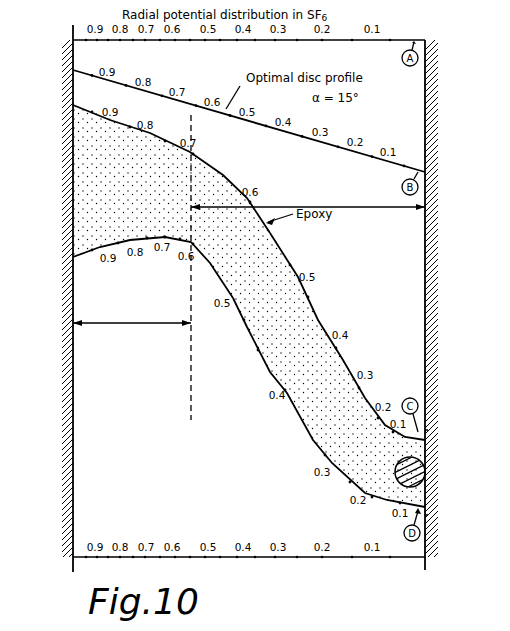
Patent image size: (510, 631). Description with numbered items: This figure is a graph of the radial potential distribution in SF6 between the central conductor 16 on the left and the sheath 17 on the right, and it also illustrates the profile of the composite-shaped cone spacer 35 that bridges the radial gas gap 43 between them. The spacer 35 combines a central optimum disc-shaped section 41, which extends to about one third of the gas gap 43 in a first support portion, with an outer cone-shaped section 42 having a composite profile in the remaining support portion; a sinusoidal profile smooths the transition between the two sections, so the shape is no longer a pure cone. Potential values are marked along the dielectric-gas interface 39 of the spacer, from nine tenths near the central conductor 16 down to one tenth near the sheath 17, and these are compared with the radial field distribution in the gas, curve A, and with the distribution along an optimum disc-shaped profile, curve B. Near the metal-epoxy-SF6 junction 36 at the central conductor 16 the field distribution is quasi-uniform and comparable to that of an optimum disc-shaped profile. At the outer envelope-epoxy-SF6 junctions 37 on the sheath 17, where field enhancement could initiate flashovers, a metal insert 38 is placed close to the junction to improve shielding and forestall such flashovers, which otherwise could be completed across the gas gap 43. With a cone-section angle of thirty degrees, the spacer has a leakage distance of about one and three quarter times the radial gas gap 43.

The central conductor 16 is at (74, 342).
The sheath 17 is at (424, 222).
The composite-shaped cone spacer 35 is at (293, 365).
The metal-epoxy-SF6 junction 36 is at (82, 106).
The outer envelope-epoxy-SF6 junction 37 is at (428, 430).
The metal insert 38 is at (427, 472).
The dielectric-gas interface 39 is at (287, 257).
The disc-shaped section 41 is at (157, 327).
The cone-shaped section 42 is at (355, 206).
The gas gap 43 is at (245, 506).